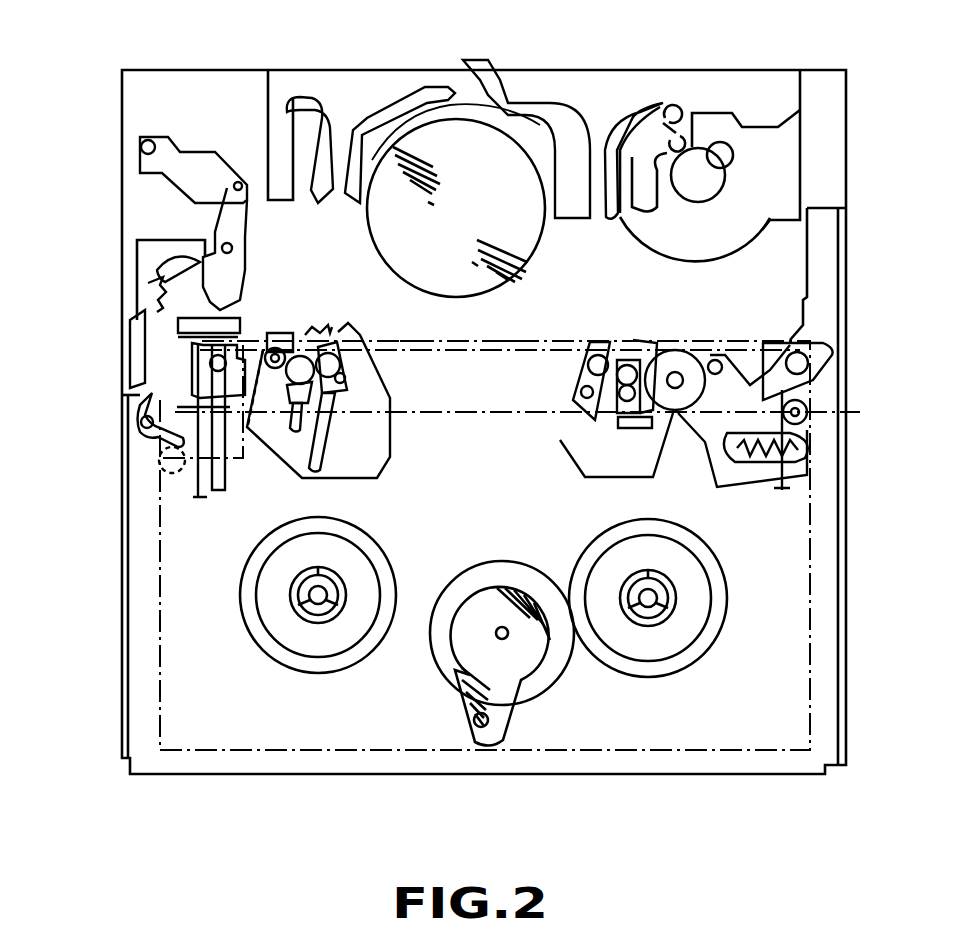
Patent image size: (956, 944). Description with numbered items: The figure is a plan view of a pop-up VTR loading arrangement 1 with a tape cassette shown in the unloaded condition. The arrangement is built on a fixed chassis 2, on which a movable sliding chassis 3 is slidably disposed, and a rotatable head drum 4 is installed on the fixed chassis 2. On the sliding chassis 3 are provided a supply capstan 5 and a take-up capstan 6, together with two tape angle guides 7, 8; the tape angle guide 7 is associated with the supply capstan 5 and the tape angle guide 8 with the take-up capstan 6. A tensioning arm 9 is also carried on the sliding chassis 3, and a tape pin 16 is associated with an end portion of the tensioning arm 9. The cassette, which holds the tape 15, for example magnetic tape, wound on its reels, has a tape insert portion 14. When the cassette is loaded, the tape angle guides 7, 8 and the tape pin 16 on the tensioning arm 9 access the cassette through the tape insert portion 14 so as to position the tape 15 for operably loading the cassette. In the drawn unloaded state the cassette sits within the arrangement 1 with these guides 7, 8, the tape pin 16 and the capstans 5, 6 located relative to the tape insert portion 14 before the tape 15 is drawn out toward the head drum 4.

The pop-up VTR loading arrangement 1 is at (112, 162).
The fixed chassis 2 is at (145, 210).
The sliding chassis 3 is at (145, 615).
The head drum 4 is at (447, 150).
The supply capstan 5 is at (310, 638).
The take-up capstan 6 is at (650, 650).
The tape angle guide 7 is at (327, 340).
The tape angle guide 8 is at (648, 345).
The tensioning arm 9 is at (180, 385).
The tape insert portion 14 is at (410, 345).
The tape 15 is at (512, 340).
The tape pin 16 is at (278, 330).